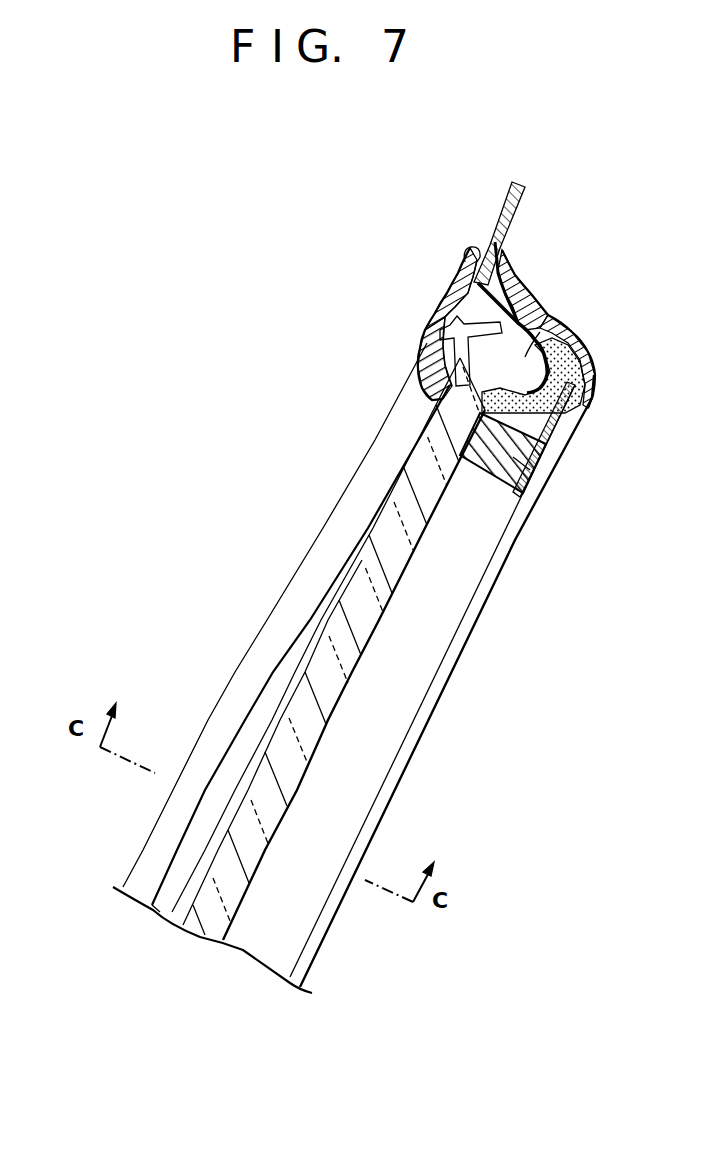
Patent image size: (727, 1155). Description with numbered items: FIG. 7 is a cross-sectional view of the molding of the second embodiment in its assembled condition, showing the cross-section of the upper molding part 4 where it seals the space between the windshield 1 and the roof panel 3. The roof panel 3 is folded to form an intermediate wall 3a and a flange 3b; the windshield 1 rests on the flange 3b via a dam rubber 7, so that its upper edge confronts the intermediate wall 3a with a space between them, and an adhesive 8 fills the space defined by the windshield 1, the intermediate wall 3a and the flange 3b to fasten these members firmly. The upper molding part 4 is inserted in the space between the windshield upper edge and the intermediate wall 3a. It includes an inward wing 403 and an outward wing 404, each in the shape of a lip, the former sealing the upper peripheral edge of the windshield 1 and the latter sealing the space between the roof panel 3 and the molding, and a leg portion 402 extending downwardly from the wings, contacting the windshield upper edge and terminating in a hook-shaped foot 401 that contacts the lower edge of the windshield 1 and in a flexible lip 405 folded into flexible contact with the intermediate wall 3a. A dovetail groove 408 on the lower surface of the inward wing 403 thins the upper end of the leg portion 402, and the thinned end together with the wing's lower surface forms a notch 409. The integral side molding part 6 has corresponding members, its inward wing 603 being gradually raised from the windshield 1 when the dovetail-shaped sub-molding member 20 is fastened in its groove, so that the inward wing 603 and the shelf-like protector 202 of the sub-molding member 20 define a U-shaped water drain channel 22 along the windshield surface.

The windshield 1 is at (423, 498).
The roof panel 3 is at (500, 194).
The intermediate wall 3a is at (540, 332).
The flange 3b is at (550, 452).
The upper molding part 4 is at (432, 243).
The side molding part 6 is at (232, 630).
The dam rubber 7 is at (532, 478).
The adhesive 8 is at (541, 433).
The sub-molding member 20 is at (241, 743).
The water drain channel 22 is at (166, 903).
The shelf-like protector 202 is at (193, 877).
The foot 401 is at (548, 397).
The leg portion 402 is at (552, 322).
The inward wing 403 is at (428, 345).
The outward wing 404 is at (470, 250).
The flexible lip 405 is at (520, 308).
The dovetail groove 408 is at (440, 313).
The notch 409 is at (490, 300).
The inward wing 603 is at (178, 813).